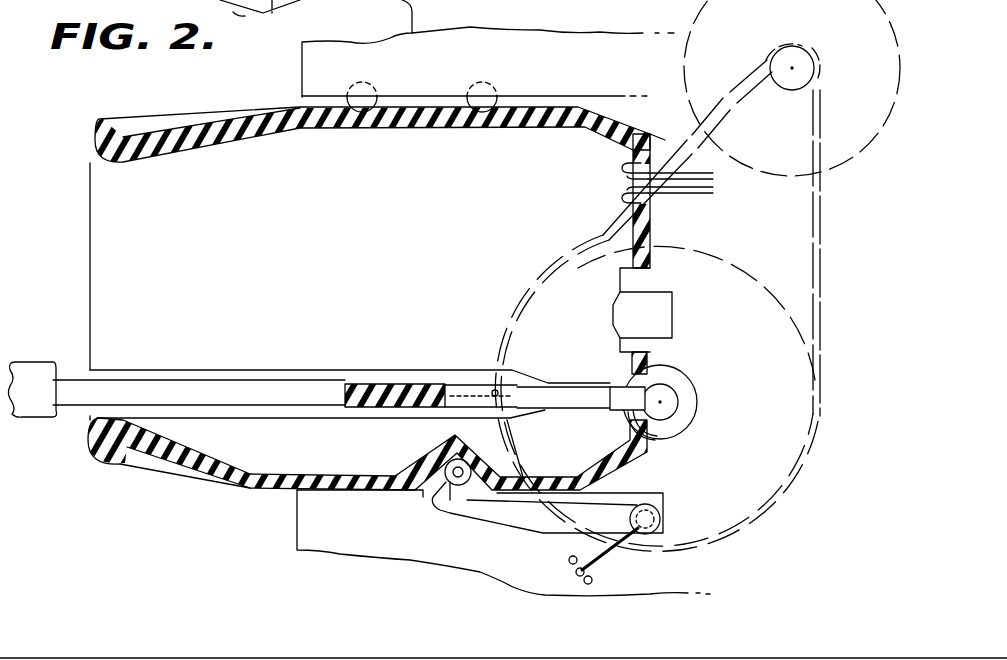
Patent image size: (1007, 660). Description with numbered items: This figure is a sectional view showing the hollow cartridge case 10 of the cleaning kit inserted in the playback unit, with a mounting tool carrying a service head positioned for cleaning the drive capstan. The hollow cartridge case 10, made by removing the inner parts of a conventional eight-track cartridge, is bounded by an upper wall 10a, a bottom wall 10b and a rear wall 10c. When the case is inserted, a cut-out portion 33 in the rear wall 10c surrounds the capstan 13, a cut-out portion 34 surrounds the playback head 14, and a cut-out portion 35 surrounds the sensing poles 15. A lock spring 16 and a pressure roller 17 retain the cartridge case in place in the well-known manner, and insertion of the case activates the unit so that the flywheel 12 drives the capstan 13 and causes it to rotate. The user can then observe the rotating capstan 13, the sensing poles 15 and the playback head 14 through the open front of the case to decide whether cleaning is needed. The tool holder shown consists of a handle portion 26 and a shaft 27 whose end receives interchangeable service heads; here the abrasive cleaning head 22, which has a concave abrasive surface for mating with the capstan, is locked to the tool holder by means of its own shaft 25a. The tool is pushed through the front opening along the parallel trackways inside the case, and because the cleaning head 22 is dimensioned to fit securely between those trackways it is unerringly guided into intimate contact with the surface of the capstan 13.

The hollow cartridge case 10 is at (404, 273).
The upper wall 10a is at (330, 122).
The bottom wall 10b is at (262, 466).
The rear wall 10c is at (652, 242).
The flywheel 12 is at (825, 373).
The capstan 13 is at (692, 427).
The playback head 14 is at (673, 296).
The sensing poles 15 is at (703, 180).
The lock spring 16 is at (598, 562).
The pressure roller 17 is at (437, 490).
The cleaning head 22 is at (622, 410).
The shaft 25a is at (569, 397).
The handle portion 26 is at (30, 357).
The shaft 27 is at (267, 389).
The cut-out portion 33 is at (653, 441).
The cut-out portion 34 is at (645, 274).
The cut-out portion 35 is at (660, 150).